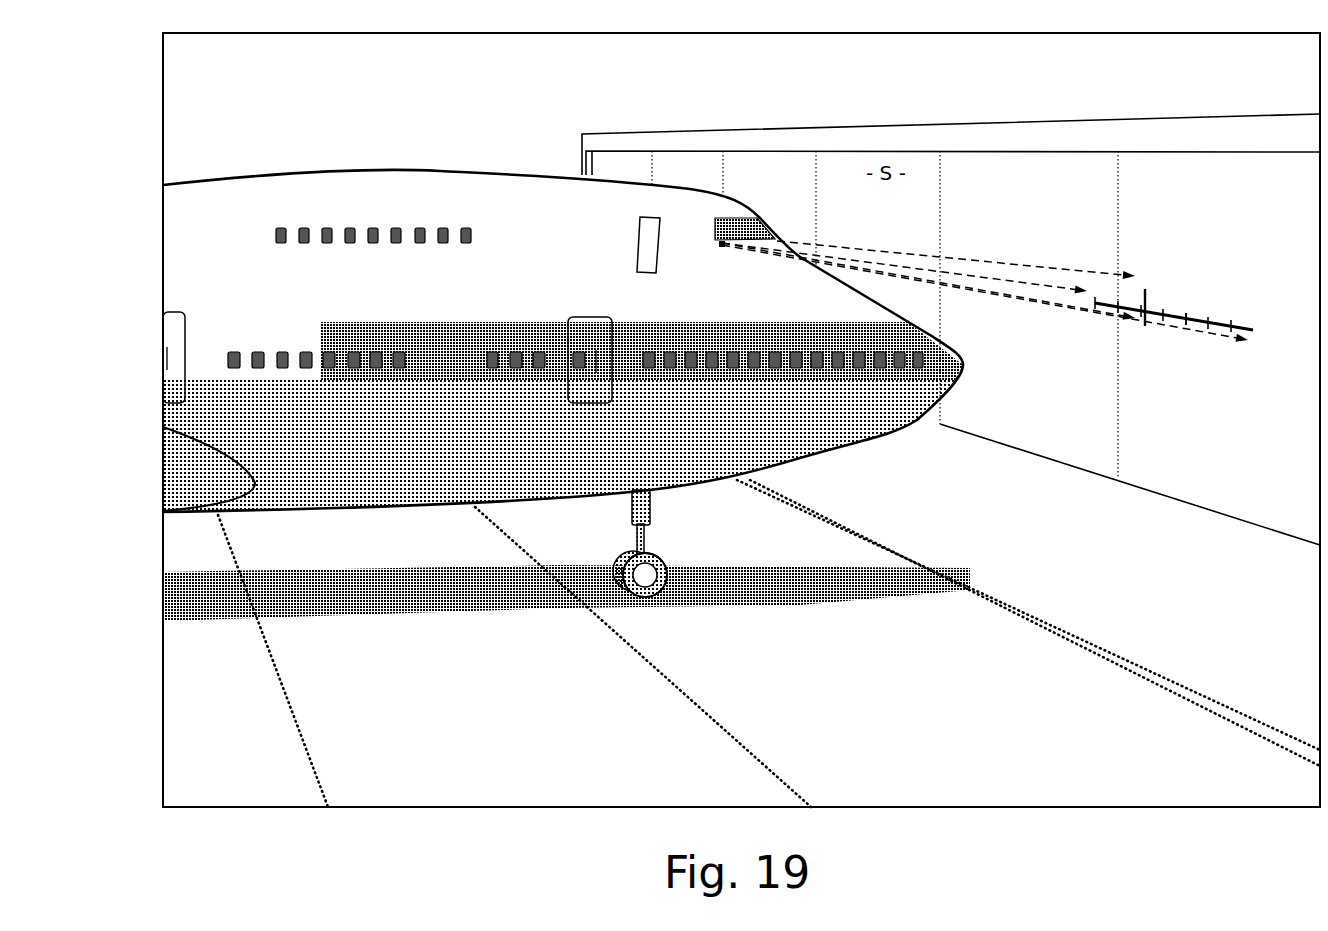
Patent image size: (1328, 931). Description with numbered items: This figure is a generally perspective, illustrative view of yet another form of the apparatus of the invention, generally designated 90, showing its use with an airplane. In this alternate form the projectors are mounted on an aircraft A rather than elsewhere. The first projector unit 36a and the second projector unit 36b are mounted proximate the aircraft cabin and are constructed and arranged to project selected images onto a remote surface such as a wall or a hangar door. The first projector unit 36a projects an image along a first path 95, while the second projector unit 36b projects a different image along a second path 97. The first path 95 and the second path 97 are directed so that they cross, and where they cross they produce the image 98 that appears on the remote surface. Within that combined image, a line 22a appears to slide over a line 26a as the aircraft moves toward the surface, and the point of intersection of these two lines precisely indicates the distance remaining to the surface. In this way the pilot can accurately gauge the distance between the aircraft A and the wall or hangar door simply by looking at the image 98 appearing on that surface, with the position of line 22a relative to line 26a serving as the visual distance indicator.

The aircraft A is at (460, 170).
The first projector unit 36a is at (722, 245).
The second projector unit 36b is at (777, 228).
The first path 95 is at (878, 270).
The second path 97 is at (982, 262).
The apparatus 90 is at (962, 235).
The line 22a is at (1145, 289).
The image 98 is at (1179, 280).
The line 26a is at (1247, 318).